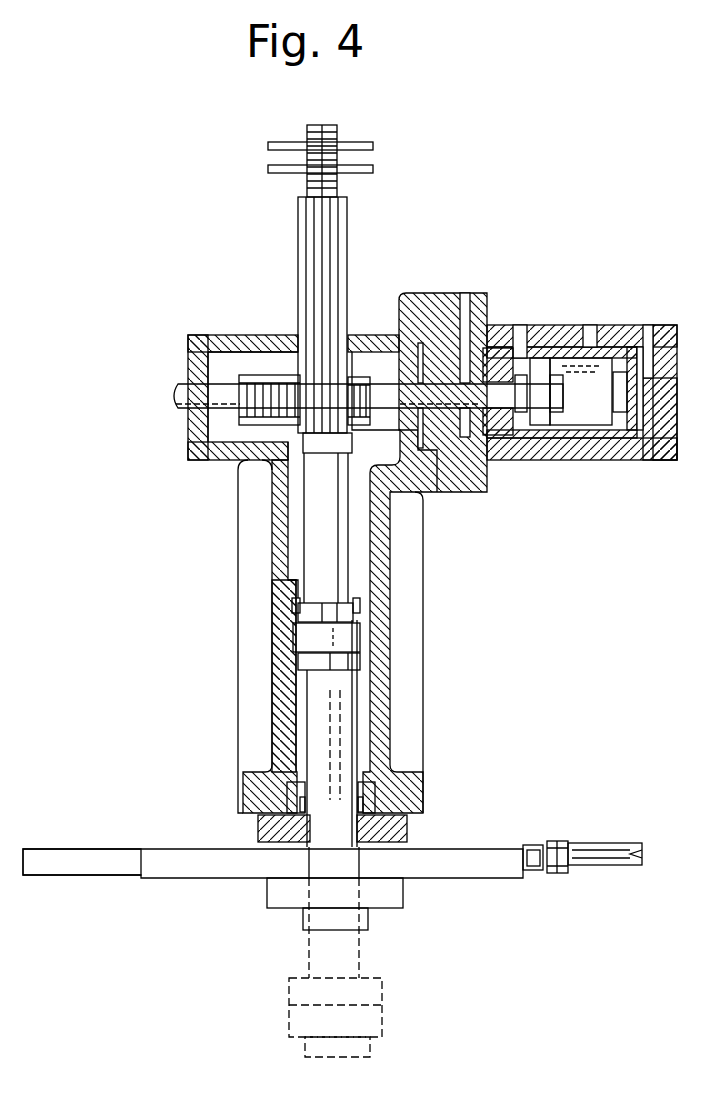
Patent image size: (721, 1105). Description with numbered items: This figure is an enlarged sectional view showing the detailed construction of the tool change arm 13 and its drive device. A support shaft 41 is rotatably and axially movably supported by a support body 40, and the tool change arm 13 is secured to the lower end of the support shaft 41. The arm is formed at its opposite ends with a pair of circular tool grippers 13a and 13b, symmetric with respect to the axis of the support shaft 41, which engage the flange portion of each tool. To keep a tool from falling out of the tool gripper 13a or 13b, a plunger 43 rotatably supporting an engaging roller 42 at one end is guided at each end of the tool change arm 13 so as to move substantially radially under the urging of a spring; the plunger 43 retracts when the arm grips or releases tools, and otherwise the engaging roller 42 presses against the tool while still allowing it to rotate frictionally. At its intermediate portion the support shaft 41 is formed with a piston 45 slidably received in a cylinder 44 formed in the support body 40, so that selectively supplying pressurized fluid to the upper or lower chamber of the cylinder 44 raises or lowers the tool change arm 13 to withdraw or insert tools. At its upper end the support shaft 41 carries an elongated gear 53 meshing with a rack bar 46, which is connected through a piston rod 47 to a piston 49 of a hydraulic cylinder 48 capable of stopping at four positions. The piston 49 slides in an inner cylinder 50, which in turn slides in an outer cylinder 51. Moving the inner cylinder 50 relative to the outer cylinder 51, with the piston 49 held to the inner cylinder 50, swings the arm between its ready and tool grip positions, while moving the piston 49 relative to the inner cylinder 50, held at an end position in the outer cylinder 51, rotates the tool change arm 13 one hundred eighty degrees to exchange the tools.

The tool change arm 13 is at (206, 880).
The tool gripper 13a is at (613, 858).
The tool gripper 13b is at (80, 880).
The support body 40 is at (274, 538).
The support shaft 41 is at (346, 715).
The engaging roller 42 is at (558, 857).
The plunger 43 is at (530, 852).
The cylinder 44 is at (298, 717).
The piston 45 is at (353, 642).
The rack bar 46 is at (271, 382).
The piston rod 47 is at (472, 400).
The hydraulic cylinder 48 is at (627, 325).
The piston 49 is at (540, 360).
The inner cylinder 50 is at (572, 358).
The outer cylinder 51 is at (572, 460).
The elongated gear 53 is at (333, 272).